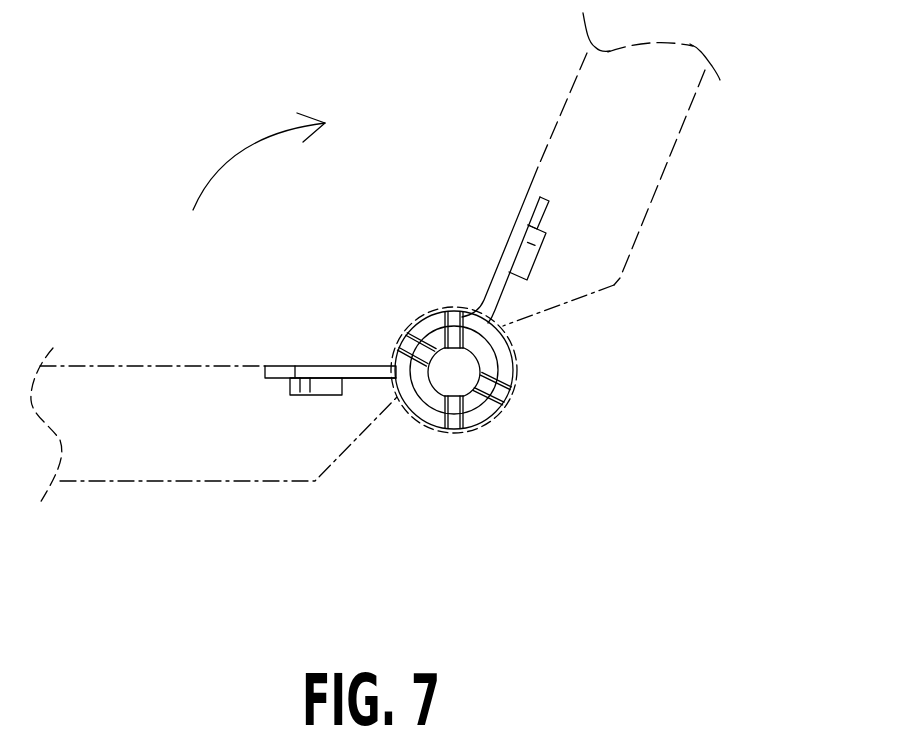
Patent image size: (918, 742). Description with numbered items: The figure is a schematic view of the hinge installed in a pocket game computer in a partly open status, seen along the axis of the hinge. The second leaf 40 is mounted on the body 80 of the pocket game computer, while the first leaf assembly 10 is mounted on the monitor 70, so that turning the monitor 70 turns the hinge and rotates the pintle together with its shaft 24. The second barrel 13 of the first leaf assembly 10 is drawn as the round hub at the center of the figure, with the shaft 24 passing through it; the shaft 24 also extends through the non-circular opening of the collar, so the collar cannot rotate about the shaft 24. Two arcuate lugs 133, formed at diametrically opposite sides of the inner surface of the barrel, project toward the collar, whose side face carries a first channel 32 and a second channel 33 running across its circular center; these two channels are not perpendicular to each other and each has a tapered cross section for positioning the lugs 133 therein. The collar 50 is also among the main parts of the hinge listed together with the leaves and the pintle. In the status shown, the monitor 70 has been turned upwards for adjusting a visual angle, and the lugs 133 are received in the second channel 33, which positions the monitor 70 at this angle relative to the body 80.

The first leaf assembly 10 is at (505, 233).
The second barrel 13 is at (427, 325).
The shaft 24 is at (465, 378).
The first channel 32 is at (452, 305).
The second channel 33 is at (393, 367).
The arcuate lugs 133 is at (405, 357).
The second leaf 40 is at (357, 380).
The collar 50 is at (493, 360).
The monitor 70 is at (652, 150).
The body 80 is at (203, 470).